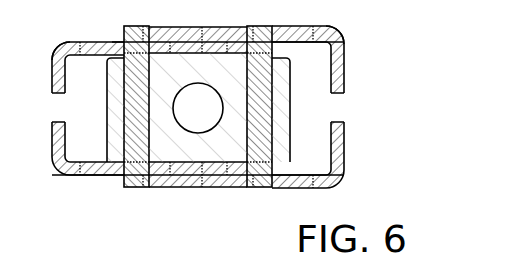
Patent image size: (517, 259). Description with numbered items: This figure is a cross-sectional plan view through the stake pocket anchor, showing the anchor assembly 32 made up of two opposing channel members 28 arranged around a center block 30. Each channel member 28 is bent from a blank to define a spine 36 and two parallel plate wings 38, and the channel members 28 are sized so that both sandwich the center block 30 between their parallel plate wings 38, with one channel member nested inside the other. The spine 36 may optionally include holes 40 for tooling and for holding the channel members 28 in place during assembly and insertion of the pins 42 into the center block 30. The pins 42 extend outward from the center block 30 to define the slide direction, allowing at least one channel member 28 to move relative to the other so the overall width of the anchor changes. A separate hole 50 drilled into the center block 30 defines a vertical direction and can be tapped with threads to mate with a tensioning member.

The channel member 28 is at (50, 152).
The center block 30 is at (283, 99).
The anchor assembly 32 is at (420, 86).
The spine 36 is at (58, 78).
The parallel plate wings 38 is at (174, 170).
The holes 40 is at (54, 104).
The pins 42 is at (130, 168).
The hole 50 is at (211, 117).